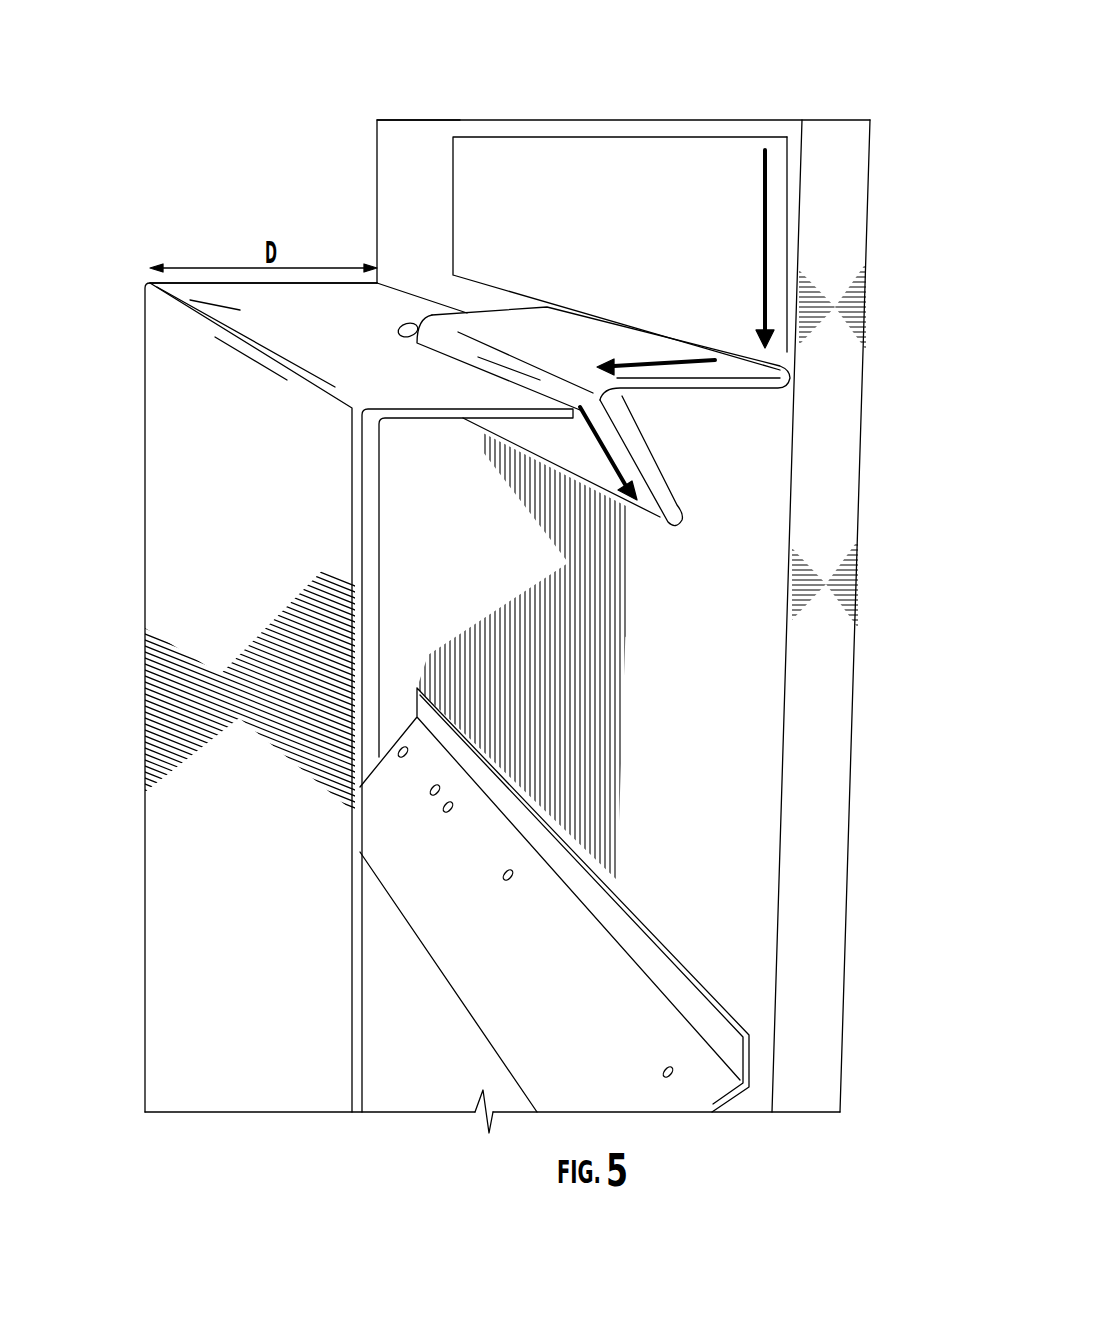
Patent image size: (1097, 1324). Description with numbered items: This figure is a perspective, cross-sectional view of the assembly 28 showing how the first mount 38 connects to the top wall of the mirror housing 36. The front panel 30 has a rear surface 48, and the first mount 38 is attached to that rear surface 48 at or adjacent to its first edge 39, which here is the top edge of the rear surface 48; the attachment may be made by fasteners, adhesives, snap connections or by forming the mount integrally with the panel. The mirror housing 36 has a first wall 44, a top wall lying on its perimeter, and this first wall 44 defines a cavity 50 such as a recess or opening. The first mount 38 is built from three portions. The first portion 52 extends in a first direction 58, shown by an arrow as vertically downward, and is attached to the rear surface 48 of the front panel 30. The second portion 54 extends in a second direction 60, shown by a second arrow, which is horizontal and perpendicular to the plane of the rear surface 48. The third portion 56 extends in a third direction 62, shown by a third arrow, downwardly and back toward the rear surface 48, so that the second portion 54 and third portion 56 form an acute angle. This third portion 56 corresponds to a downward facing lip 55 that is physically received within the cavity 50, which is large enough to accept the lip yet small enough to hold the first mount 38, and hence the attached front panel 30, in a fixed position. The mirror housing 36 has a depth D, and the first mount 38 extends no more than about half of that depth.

The building assembly 28 is at (868, 87).
The front panel 30 is at (862, 807).
The mirror housing 36 is at (134, 566).
The first mount 38 is at (529, 124).
The first edge 39 is at (415, 118).
The first wall 44 is at (148, 282).
The rear surface 48 is at (763, 923).
The cavity 50 is at (394, 323).
The first portion 52 is at (797, 190).
The second portion 54 is at (750, 378).
The downward facing lip 55 is at (698, 461).
The third portion 56 is at (663, 502).
The first direction 58 is at (762, 198).
The second direction 60 is at (665, 360).
The third direction 62 is at (605, 455).